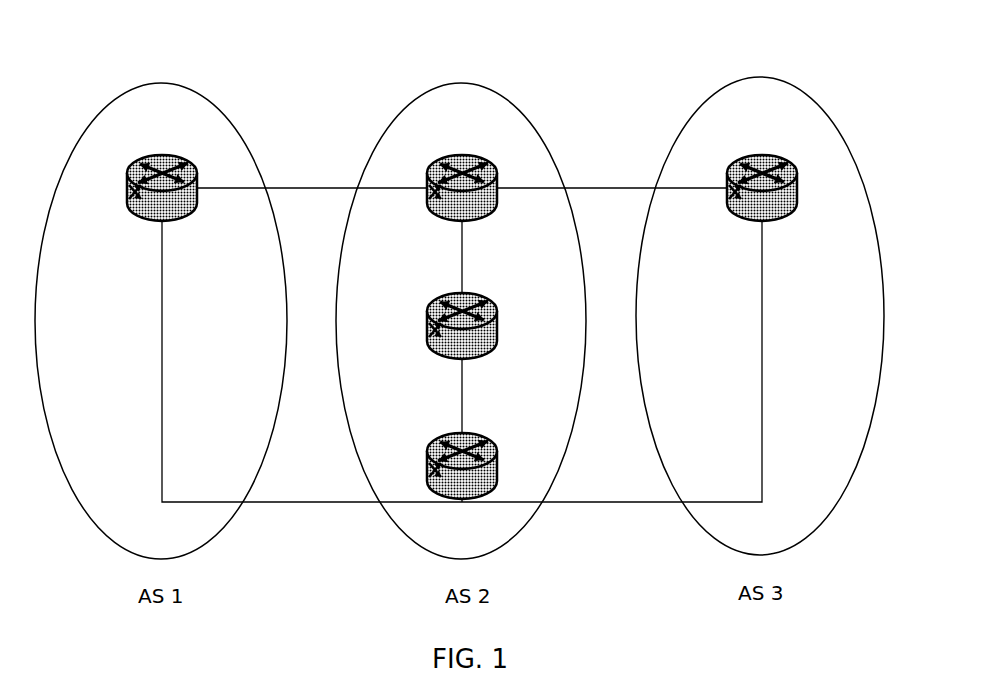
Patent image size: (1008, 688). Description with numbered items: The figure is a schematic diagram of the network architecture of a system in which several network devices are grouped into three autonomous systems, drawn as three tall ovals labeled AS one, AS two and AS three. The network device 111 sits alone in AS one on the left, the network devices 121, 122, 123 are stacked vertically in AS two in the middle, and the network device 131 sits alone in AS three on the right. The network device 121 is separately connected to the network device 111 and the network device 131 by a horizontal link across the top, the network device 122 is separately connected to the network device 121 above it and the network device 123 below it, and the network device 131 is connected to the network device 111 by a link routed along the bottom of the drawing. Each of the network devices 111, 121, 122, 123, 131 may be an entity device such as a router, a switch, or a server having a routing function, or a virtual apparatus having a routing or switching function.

The network device 111 is at (188, 160).
The network device 121 is at (488, 160).
The network device 122 is at (488, 300).
The network device 123 is at (488, 440).
The network device 131 is at (788, 160).